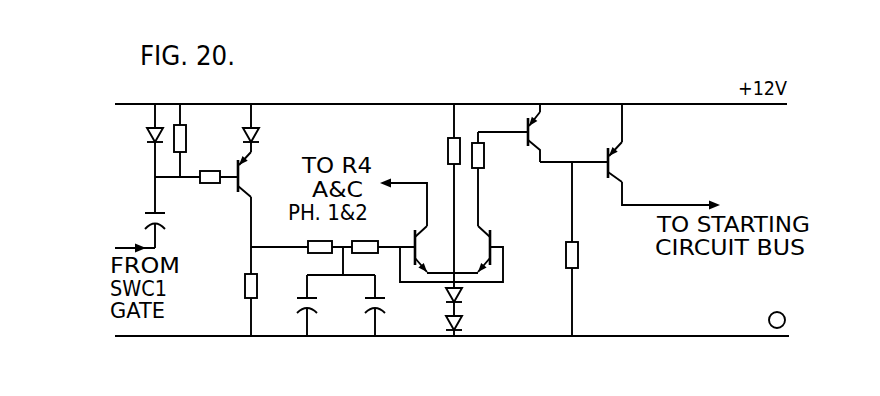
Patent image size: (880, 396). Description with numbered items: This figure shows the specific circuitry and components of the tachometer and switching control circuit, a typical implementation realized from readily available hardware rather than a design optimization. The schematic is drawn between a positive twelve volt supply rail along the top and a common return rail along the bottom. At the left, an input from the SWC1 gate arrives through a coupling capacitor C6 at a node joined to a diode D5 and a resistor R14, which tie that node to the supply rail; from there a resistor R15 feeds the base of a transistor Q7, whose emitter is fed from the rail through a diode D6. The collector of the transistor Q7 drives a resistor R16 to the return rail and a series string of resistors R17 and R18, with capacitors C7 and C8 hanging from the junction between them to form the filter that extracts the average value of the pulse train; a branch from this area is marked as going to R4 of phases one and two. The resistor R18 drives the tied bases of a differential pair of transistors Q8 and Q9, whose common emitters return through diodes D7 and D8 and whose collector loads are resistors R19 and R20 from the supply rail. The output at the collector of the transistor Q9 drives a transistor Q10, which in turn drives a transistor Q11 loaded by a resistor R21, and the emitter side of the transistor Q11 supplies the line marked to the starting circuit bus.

The diode D5 is at (138, 128).
The resistor R14 is at (197, 138).
The diode D6 is at (268, 139).
The transistor Q7 is at (258, 174).
The resistor R15 is at (204, 190).
The capacitor C6 is at (171, 225).
The resistor R16 is at (230, 287).
The resistor R17 is at (317, 243).
The resistor R18 is at (362, 243).
The capacitor C7 is at (287, 312).
The capacitor C8 is at (357, 312).
The resistor R19 is at (432, 149).
The resistor R20 is at (501, 162).
The transistor Q8 is at (432, 249).
The transistor Q9 is at (505, 241).
The diode D7 is at (463, 296).
The diode D8 is at (463, 326).
The transistor Q10 is at (556, 134).
The transistor Q11 is at (631, 162).
The resistor R21 is at (592, 255).